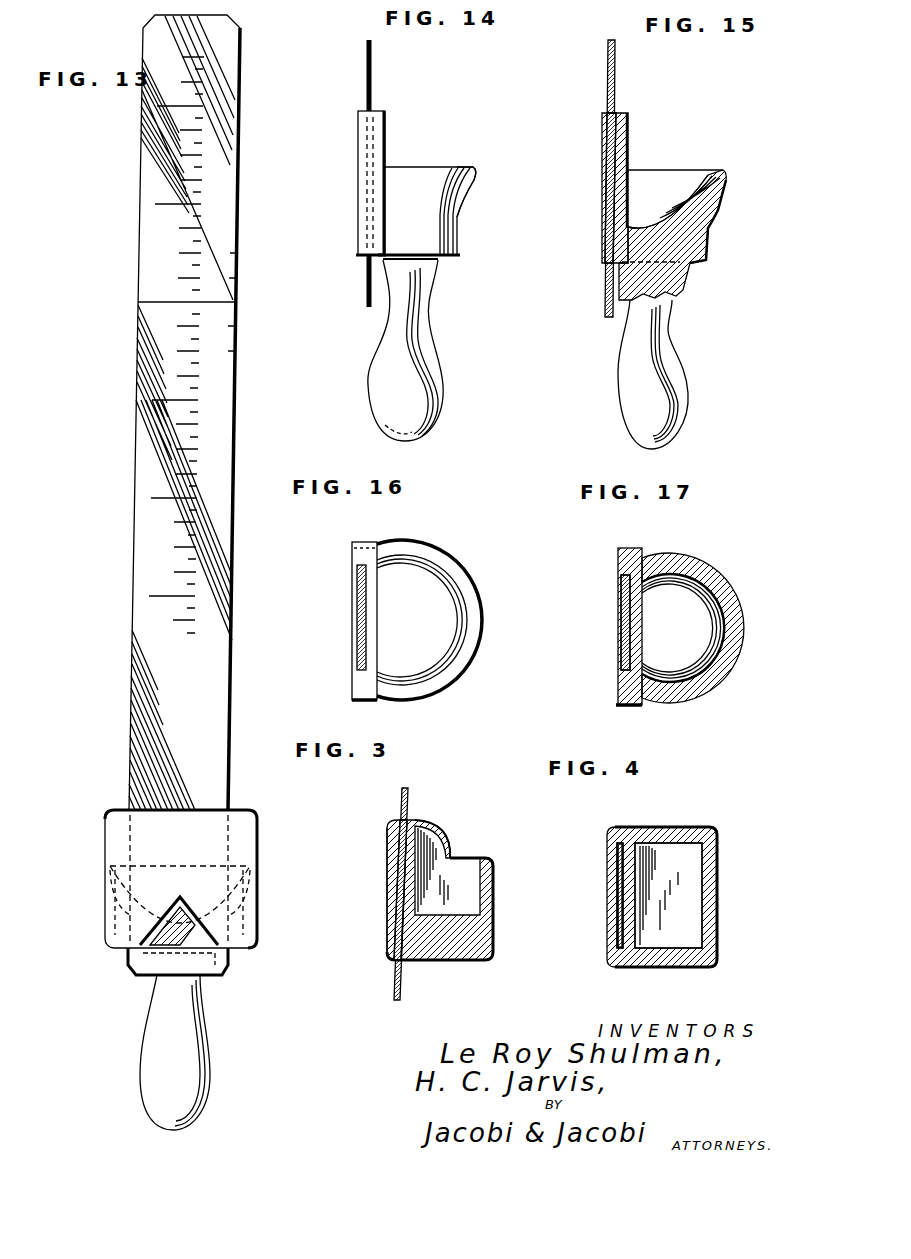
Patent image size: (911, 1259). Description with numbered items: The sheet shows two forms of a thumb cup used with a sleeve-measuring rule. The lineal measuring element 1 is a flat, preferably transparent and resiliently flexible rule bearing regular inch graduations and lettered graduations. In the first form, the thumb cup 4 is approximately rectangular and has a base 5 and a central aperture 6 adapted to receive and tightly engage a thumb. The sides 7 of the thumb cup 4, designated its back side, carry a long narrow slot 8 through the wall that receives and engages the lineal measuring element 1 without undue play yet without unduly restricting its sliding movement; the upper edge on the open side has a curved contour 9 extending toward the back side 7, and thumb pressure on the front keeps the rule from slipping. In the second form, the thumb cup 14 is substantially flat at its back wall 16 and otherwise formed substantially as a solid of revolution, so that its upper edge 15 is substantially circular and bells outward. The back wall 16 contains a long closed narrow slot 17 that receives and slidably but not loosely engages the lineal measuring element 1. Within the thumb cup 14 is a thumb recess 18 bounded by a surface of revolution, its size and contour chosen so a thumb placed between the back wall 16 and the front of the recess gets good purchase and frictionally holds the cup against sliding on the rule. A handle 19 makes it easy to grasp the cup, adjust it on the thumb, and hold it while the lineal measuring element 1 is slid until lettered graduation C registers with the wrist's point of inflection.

In FIG. 13, the lineal measuring element 1 is at (142, 176).
In FIG. 14, the lineal measuring element 1 is at (366, 55).
In FIG. 15, the lineal measuring element 1 is at (617, 72).
In FIG. 16, the lineal measuring element 1 is at (352, 598).
In FIG. 17, the lineal measuring element 1 is at (618, 602).
In FIG. 3, the lineal measuring element 1 is at (400, 795).
In FIG. 4, the lineal measuring element 1 is at (612, 918).
In FIG. 3, the thumb cup 4 is at (480, 938).
In FIG. 4, the thumb cup 4 is at (690, 832).
In FIG. 3, the base 5 is at (436, 958).
In FIG. 3, the central aperture 6 is at (462, 870).
In FIG. 4, the central aperture 6 is at (695, 905).
In FIG. 3, the back side 7 is at (387, 840).
In FIG. 3, the slot 8 is at (396, 816).
In FIG. 4, the slot 8 is at (612, 856).
In FIG. 3, the curved contour 9 is at (432, 829).
In FIG. 13, the thumb cup 14 is at (112, 836).
In FIG. 14, the thumb cup 14 is at (443, 243).
In FIG. 15, the thumb cup 14 is at (672, 235).
In FIG. 17, the thumb cup 14 is at (710, 692).
In FIG. 13, the upper edge 15 is at (200, 720).
In FIG. 14, the upper edge 15 is at (480, 172).
In FIG. 16, the upper edge 15 is at (445, 566).
In FIG. 14, the back wall 16 is at (386, 133).
In FIG. 15, the back wall 16 is at (615, 188).
In FIG. 16, the back wall 16 is at (358, 549).
In FIG. 17, the back wall 16 is at (618, 553).
In FIG. 14, the slot 17 is at (341, 176).
In FIG. 15, the thumb recess 18 is at (662, 178).
In FIG. 13, the handle 19 is at (155, 1038).
In FIG. 14, the handle 19 is at (434, 352).
In FIG. 15, the handle 19 is at (665, 378).